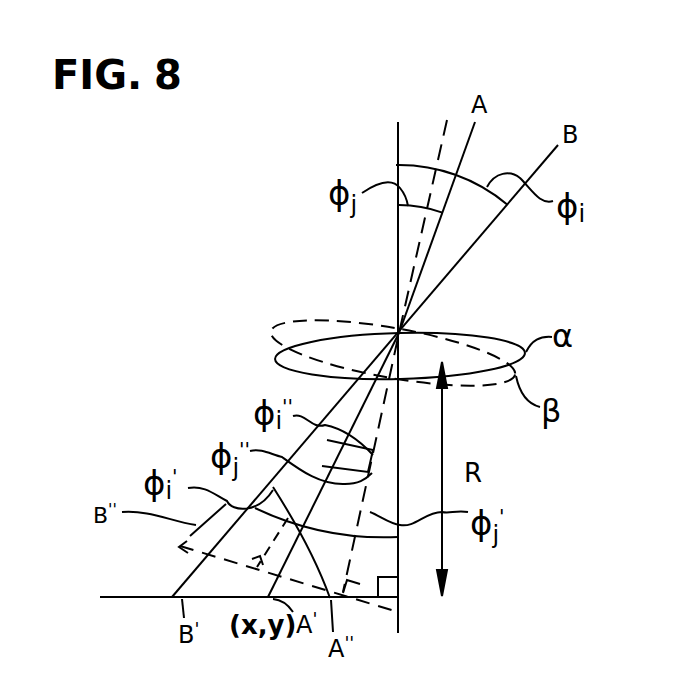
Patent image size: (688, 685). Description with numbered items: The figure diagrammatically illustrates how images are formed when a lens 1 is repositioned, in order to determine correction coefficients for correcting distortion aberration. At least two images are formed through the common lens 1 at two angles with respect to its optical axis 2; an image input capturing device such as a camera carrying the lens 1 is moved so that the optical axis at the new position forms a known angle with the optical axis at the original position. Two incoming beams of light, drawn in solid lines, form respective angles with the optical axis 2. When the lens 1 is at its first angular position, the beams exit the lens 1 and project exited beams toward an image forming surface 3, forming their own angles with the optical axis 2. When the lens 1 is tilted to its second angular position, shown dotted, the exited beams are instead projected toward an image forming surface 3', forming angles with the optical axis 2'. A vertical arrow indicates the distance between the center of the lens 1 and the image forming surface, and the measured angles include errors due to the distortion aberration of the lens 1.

The lens 1 is at (247, 349).
The optical axis 2 is at (392, 346).
The optical axis 2' is at (407, 322).
The image forming surface 3 is at (225, 626).
The image forming surface 3' is at (247, 569).